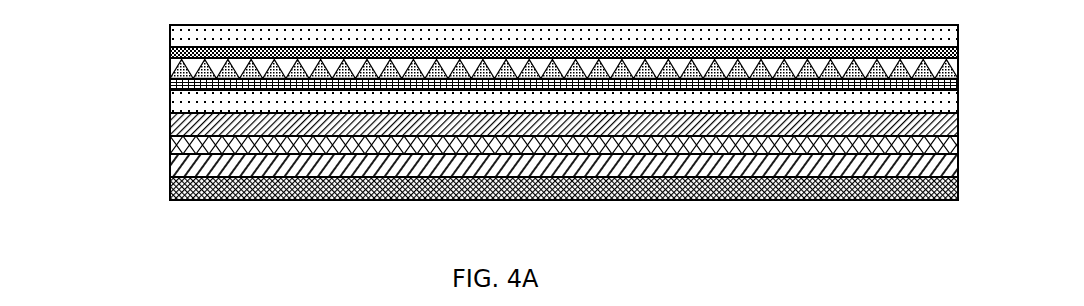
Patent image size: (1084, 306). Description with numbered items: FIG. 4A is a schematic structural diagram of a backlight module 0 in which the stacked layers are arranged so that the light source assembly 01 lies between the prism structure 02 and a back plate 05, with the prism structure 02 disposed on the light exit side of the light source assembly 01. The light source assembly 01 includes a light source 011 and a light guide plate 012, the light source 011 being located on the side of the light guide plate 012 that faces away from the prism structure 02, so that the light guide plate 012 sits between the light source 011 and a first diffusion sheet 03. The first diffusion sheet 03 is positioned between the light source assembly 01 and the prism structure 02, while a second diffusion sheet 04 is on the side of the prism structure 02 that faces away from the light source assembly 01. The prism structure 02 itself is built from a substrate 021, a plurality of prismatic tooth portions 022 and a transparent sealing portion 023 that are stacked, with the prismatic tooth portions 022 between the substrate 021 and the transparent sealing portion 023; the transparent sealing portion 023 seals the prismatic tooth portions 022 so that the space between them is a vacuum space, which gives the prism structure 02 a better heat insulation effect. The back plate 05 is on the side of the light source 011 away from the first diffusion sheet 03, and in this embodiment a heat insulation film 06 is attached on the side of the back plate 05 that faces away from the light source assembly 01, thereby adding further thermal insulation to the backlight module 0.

The backlight module 0 is at (501, 102).
The second diffusion sheet 04 is at (171, 33).
The prism structure 02 is at (88, 36).
The transparent sealing portion 023 is at (171, 50).
The prismatic tooth portions 022 is at (171, 68).
The substrate 021 is at (171, 88).
The first diffusion sheet 03 is at (171, 108).
The light source assembly 01 is at (88, 129).
The light guide plate 012 is at (171, 128).
The light source 011 is at (171, 148).
The back plate 05 is at (171, 167).
The heat insulation film 06 is at (171, 192).